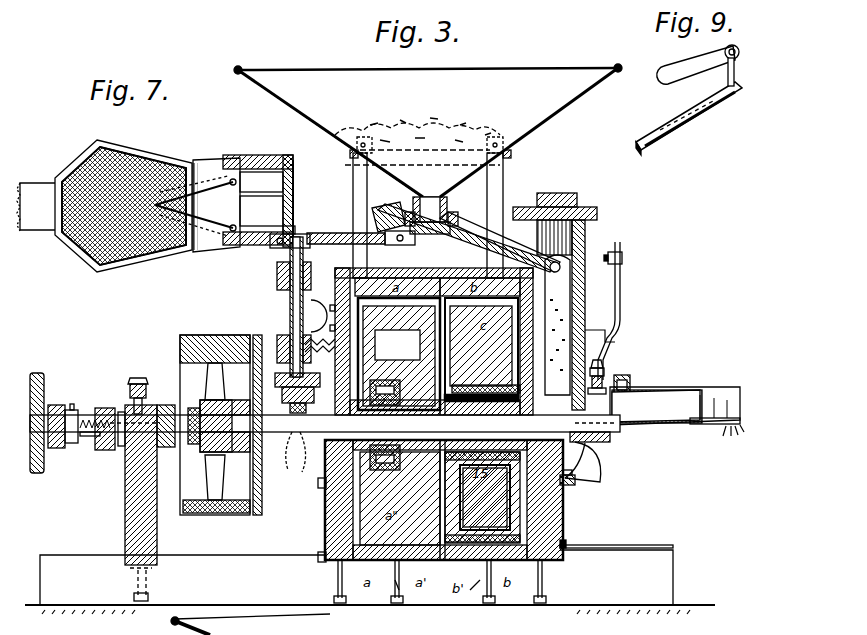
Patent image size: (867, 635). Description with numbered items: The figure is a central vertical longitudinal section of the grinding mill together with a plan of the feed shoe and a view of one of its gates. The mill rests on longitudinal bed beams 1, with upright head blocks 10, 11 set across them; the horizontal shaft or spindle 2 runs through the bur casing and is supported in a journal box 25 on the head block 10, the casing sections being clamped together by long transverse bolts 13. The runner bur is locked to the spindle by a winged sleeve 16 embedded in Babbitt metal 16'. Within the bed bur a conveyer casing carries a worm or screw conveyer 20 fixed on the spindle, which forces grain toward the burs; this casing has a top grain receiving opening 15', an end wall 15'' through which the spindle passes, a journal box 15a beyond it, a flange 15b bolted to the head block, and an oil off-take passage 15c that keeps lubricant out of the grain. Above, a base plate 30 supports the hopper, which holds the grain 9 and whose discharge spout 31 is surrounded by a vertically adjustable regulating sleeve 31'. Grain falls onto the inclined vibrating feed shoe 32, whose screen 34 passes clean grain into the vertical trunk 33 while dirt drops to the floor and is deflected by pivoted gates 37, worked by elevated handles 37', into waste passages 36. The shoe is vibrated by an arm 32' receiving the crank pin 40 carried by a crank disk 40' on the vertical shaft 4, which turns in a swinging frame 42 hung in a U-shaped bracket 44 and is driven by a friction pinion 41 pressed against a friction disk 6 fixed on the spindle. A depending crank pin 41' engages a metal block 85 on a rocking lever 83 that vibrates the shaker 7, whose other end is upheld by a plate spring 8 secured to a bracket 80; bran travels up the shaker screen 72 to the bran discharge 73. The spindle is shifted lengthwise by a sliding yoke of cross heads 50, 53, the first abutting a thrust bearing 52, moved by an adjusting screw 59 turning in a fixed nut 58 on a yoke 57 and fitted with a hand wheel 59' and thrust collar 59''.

In FIG. 3, the bed beams 1 is at (695, 545).
In FIG. 3, the shaft or spindle 2 is at (128, 440).
In FIG. 3, the vertical rotary shaft 4 is at (292, 320).
In FIG. 3, the friction driving disk 6 is at (257, 502).
In FIG. 3, the shaker 7 is at (694, 398).
In FIG. 3, the plate spring 8 is at (622, 326).
In FIG. 3, the grain 9 is at (421, 130).
In FIG. 3, the head block 10 is at (158, 537).
In FIG. 3, the head block 11 is at (326, 528).
In FIG. 3, the clamping bolts 13 is at (326, 556).
In FIG. 3, the journal box 15a is at (600, 428).
In FIG. 3, the flange 15b is at (569, 483).
In FIG. 3, the oil off-take passage 15c is at (605, 440).
In FIG. 3, the grain receiving opening 15' is at (625, 366).
In FIG. 3, the end wall 15'' is at (597, 462).
In FIG. 3, the sleeve 16 is at (399, 356).
In FIG. 3, the Babbitt metal 16' is at (395, 425).
In FIG. 3, the worm or screw conveyer 20 is at (625, 378).
In FIG. 3, the spindle journal box 25 is at (145, 414).
In FIG. 3, the base plate 30 is at (348, 270).
In FIG. 3, the discharge spout 31 is at (440, 210).
In FIG. 3, the regulating sleeve 31' is at (442, 215).
In FIG. 7, the feed shoe 32 is at (123, 194).
In FIG. 3, the feed shoe 32 is at (388, 209).
In FIG. 7, the arm 32' is at (36, 196).
In FIG. 3, the arm 32' is at (342, 226).
In FIG. 7, the trunk or chute 33 is at (284, 196).
In FIG. 3, the trunk or chute 33 is at (586, 314).
In FIG. 7, the screen 34 is at (98, 255).
In FIG. 3, the screen 34 is at (415, 205).
In FIG. 7, the waste offtake passages 36 is at (258, 170).
In FIG. 3, the waste offtake passages 36 is at (588, 232).
In FIG. 7, the pivoted gates 37 is at (188, 210).
In FIG. 9, the pivoted gates 37 is at (689, 106).
In FIG. 7, the operating handles or levers 37' is at (216, 189).
In FIG. 9, the operating handles or levers 37' is at (698, 64).
In FIG. 3, the operating handles or levers 37' is at (469, 225).
In FIG. 3, the crank or eccentric pin 40 is at (274, 259).
In FIG. 3, the crank disk or collar 40' is at (374, 228).
In FIG. 3, the friction pinion 41 is at (305, 363).
In FIG. 3, the crank pin 41' is at (310, 400).
In FIG. 3, the block or frame 42 is at (290, 297).
In FIG. 3, the bracket 44 is at (330, 308).
In FIG. 3, the cross head 50 is at (188, 376).
In FIG. 3, the thrust bearing 52 is at (192, 452).
In FIG. 3, the cross head 53 is at (56, 408).
In FIG. 3, the yoke 57 is at (165, 447).
In FIG. 3, the nut 58 is at (108, 412).
In FIG. 3, the adjusting screw 59 is at (86, 445).
In FIG. 3, the hand wheel 59' is at (47, 410).
In FIG. 3, the thrust collar 59'' is at (84, 409).
In FIG. 3, the screen 72 is at (566, 520).
In FIG. 3, the bran discharge 73 is at (725, 427).
In FIG. 3, the supporting bracket 80 is at (618, 253).
In FIG. 3, the rocking lever 83 is at (300, 445).
In FIG. 3, the metal block 85 is at (260, 398).